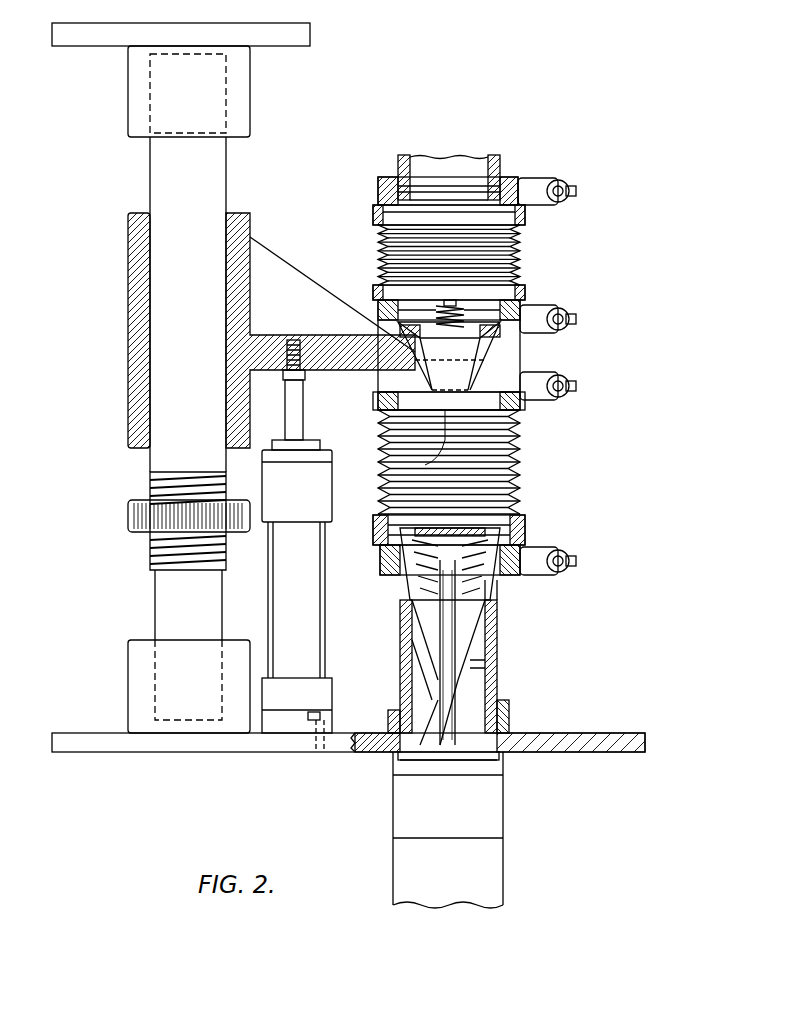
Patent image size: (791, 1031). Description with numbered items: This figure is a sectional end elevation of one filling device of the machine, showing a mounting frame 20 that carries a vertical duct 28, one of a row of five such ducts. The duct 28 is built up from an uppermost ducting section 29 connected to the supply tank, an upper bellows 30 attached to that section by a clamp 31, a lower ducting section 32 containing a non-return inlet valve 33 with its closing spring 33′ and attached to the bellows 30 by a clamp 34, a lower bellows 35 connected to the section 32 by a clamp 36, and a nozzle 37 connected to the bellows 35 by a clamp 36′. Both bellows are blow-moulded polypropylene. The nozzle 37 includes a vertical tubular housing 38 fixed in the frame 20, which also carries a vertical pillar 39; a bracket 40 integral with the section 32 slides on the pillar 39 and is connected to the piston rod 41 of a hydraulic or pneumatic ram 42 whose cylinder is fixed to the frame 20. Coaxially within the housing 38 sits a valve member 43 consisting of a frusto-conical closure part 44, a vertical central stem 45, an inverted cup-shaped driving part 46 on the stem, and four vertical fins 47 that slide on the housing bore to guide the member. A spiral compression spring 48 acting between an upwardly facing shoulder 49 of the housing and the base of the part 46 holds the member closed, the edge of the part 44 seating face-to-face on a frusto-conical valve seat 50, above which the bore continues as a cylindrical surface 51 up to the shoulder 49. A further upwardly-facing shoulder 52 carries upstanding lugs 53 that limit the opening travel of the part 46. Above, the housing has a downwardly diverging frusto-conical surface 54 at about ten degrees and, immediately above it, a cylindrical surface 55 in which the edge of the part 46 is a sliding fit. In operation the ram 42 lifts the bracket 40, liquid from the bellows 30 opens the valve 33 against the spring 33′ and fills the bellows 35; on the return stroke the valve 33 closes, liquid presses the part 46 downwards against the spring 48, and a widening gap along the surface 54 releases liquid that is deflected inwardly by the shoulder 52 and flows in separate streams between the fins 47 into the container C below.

The mounting frame 20 is at (281, 46).
The vertical duct 28 is at (535, 463).
The uppermost ducting section 29 is at (502, 168).
The upper bellows 30 is at (522, 262).
The clamp 31 is at (558, 203).
The lower ducting section 32 is at (488, 362).
The non-return inlet valve 33 is at (420, 352).
The closing spring 33′ is at (425, 306).
The clamp 34 is at (562, 330).
The lower bellows 35 is at (522, 496).
The clamp 36 is at (560, 398).
The clamp 36′ is at (556, 573).
The nozzle 37 is at (478, 676).
The vertical tubular housing 38 is at (505, 700).
The vertical pillar 39 is at (150, 166).
The bracket 40 is at (140, 272).
The piston rod 41 is at (303, 426).
The ram 42 is at (326, 640).
The valve member 43 is at (458, 662).
The frusto-conical closure part 44 is at (480, 758).
The vertical central stem 45 is at (445, 665).
The driving part 46 is at (400, 524).
The vertical fin 47 is at (440, 690).
The spiral compression spring 48 is at (420, 582).
The upwardly facing shoulder 49 is at (445, 622).
The frusto-conical valve seat 50 is at (418, 760).
The circular cylindrical bore surface 51 is at (480, 672).
The upwardly-facing shoulder 52 is at (414, 606).
The upstanding lug 53 is at (494, 606).
The frusto-conical internal surface 54 is at (492, 578).
The cylindrical internal surface 55 is at (503, 542).
The container C is at (503, 820).